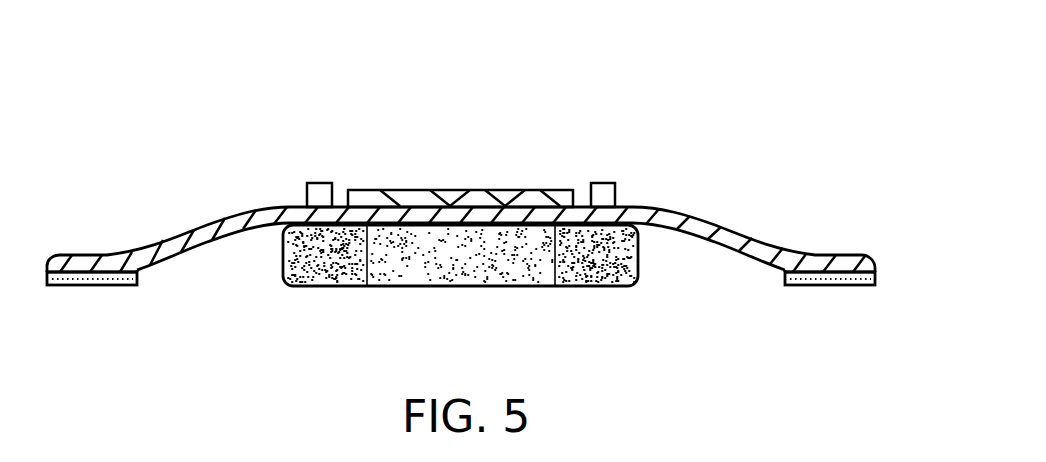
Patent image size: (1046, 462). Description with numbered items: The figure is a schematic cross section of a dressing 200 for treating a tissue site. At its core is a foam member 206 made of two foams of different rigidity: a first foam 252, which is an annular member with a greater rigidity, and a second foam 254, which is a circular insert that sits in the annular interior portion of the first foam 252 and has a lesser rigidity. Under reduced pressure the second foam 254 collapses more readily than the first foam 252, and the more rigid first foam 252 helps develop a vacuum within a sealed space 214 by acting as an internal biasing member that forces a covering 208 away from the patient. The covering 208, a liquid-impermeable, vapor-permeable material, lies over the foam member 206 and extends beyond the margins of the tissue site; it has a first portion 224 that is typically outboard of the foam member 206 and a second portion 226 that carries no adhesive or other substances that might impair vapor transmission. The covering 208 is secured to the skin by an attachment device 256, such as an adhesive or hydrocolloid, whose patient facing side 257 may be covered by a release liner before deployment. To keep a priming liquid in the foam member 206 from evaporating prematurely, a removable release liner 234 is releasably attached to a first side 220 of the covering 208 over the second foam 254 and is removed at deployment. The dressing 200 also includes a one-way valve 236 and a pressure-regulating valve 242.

The dressing 200 is at (718, 74).
The foam member 206 is at (455, 297).
The covering 208 is at (720, 210).
The sealed space 214 is at (508, 268).
The first side 220 is at (666, 207).
The first portion 224 is at (124, 248).
The second portion 226 is at (520, 205).
The removable release liner 234 is at (408, 190).
The one-way valve 236 is at (318, 183).
The pressure-regulating valve 242 is at (603, 183).
The first foam 252 is at (320, 276).
The second foam 254 is at (405, 276).
The attachment device 256 is at (150, 273).
The patient facing side 257 is at (95, 286).